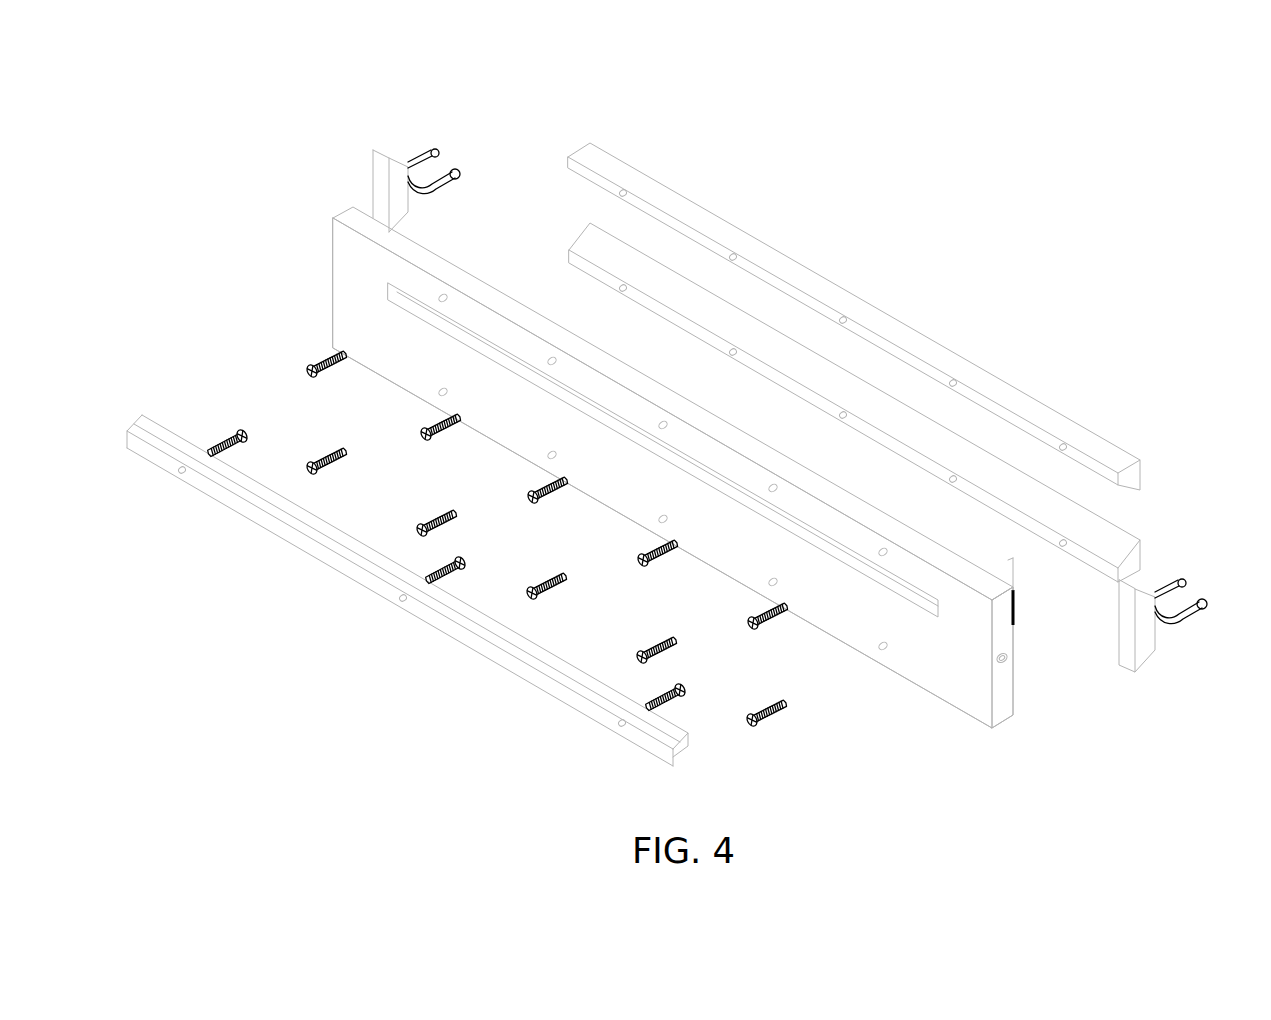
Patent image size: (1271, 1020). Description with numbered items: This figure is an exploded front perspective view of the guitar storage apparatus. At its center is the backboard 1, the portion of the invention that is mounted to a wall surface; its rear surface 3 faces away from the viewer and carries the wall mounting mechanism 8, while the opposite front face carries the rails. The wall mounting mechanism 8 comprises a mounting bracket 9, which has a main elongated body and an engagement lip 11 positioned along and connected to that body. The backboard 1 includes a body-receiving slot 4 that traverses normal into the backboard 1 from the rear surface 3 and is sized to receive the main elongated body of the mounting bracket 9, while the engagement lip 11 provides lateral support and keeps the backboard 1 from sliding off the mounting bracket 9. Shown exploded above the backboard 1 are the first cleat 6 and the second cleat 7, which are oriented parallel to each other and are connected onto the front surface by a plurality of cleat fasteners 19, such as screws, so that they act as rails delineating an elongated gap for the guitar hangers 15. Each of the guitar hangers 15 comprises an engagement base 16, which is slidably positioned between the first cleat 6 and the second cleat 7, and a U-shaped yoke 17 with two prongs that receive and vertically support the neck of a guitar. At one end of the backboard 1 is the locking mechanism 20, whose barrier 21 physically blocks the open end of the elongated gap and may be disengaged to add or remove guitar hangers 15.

The backboard 1 is at (342, 213).
The rear surface 3 is at (908, 665).
The body-receiving slot 4 is at (740, 496).
The first cleat 6 is at (933, 349).
The second cleat 7 is at (909, 458).
The wall mounting mechanism 8 is at (176, 366).
The mounting bracket 9 is at (404, 603).
The engagement lip 11 is at (222, 446).
The guitar hangers 15 is at (768, 408).
The engagement base 16 is at (410, 210).
The U-shaped yoke 17 is at (448, 168).
The cleat fasteners 19 is at (551, 493).
The locking mechanism 20 is at (1028, 685).
The barrier 21 is at (1011, 562).